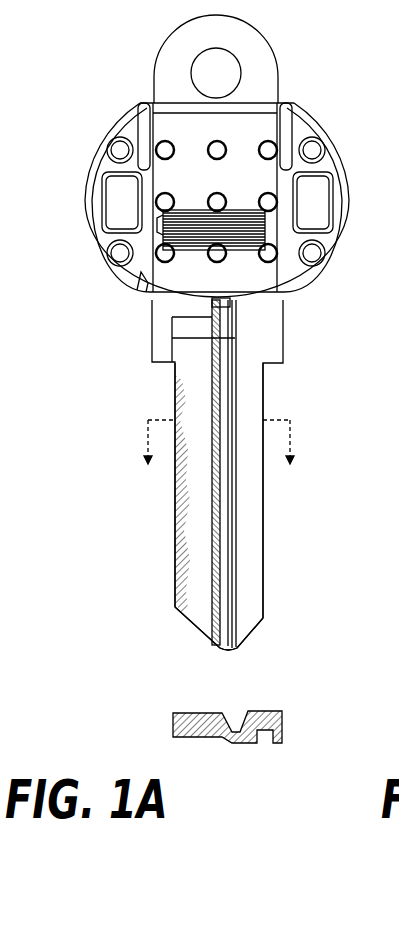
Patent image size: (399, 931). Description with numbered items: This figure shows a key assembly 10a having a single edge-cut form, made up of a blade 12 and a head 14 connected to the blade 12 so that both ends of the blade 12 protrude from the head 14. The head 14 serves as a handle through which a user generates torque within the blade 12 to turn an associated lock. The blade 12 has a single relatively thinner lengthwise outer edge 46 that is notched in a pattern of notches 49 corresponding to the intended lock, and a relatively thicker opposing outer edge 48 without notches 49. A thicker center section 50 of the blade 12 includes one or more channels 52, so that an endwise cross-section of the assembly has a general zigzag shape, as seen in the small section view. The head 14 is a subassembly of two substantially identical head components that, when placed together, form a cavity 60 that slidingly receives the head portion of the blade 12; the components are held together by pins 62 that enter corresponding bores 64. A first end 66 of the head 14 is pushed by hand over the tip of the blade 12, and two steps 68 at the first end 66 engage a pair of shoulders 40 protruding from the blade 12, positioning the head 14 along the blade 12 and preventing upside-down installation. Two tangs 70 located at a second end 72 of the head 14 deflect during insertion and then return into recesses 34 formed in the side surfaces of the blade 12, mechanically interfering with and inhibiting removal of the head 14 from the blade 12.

The key assembly 10a is at (324, 64).
The blade 12 is at (284, 345).
The head 14 is at (312, 282).
The recesses 34 is at (267, 141).
The shoulders 40 is at (152, 317).
The outer edge 46 is at (180, 590).
The opposing outer edge 48 is at (312, 722).
The notches 49 is at (178, 548).
The center section 50 is at (214, 654).
The channels 52 is at (225, 650).
The cavity 60 is at (160, 227).
The pins 62 is at (114, 150).
The bores 64 is at (216, 201).
The first end 66 is at (96, 292).
The steps 68 is at (140, 288).
The tangs 70 is at (124, 83).
The second end 72 is at (96, 106).